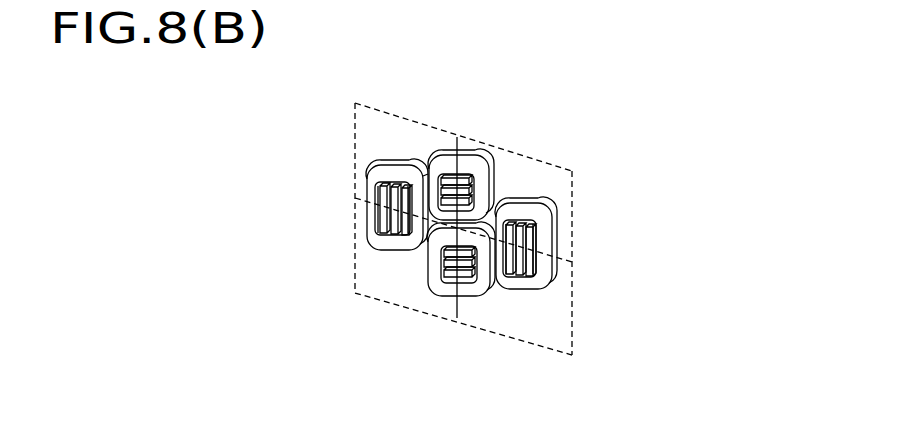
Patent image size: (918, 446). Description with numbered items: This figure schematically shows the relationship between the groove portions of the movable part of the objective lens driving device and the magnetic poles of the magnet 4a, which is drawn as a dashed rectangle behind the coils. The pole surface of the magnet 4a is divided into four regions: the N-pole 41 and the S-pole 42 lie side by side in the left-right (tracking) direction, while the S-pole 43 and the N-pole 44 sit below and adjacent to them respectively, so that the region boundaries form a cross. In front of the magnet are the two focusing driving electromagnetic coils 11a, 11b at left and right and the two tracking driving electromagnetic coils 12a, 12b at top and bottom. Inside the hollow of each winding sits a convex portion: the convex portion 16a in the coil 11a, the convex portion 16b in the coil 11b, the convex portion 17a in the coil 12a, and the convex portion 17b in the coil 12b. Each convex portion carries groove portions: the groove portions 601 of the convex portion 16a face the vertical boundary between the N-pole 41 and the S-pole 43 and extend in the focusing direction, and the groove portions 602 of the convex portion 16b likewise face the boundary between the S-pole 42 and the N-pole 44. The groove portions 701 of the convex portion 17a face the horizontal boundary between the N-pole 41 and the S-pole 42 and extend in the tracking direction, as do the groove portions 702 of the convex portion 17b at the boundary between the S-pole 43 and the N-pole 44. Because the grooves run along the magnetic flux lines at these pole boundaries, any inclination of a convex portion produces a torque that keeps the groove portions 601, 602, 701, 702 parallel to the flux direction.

The magnet 4a is at (458, 235).
The N-pole 41 is at (383, 130).
The S-pole 42 is at (535, 177).
The S-pole 43 is at (378, 265).
The N-pole 44 is at (517, 310).
The focusing driving electromagnetic coil 11a is at (373, 180).
The focusing driving electromagnetic coil 11b is at (557, 252).
The tracking driving electromagnetic coil 12a is at (493, 175).
The tracking driving electromagnetic coil 12b is at (433, 260).
The convex portion 16a is at (382, 200).
The convex portion 16b is at (533, 217).
The convex portion 17a is at (448, 177).
The convex portion 17b is at (450, 283).
The groove portion 601 is at (387, 220).
The groove portion 602 is at (525, 268).
The groove portion 701 is at (463, 180).
The groove portion 702 is at (440, 267).